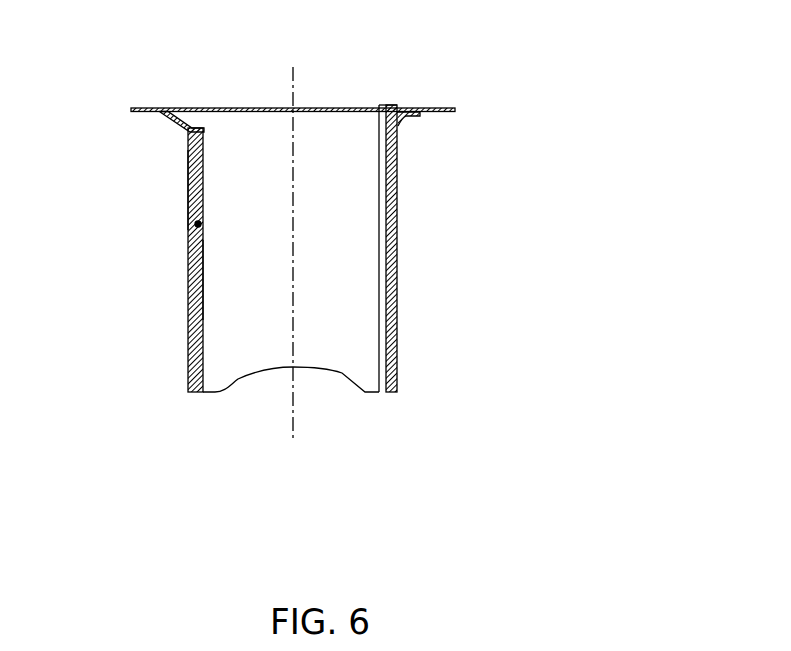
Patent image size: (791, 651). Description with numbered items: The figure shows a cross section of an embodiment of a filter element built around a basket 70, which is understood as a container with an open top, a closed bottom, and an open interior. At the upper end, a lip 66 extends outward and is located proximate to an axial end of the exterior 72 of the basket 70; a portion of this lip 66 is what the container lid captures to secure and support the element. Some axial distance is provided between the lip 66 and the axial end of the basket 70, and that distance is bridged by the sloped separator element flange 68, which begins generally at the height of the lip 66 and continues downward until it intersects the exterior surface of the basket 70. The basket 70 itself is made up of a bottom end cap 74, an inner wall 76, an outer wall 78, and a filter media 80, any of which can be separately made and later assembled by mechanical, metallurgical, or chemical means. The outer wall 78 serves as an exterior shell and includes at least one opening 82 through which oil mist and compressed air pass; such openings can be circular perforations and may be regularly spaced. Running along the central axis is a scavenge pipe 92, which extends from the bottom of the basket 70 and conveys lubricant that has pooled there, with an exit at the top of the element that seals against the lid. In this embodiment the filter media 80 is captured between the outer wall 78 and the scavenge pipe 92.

The lip 66 is at (147, 112).
The separator element flange 68 is at (176, 124).
The basket 70 is at (608, 206).
The exterior of the basket 72 is at (188, 363).
The bottom end cap 74 is at (215, 394).
The inner wall 76 is at (235, 281).
The outer wall 78 is at (188, 190).
The filter media 80 is at (196, 224).
The opening 82 is at (398, 165).
The scavenge pipe 92 is at (382, 104).